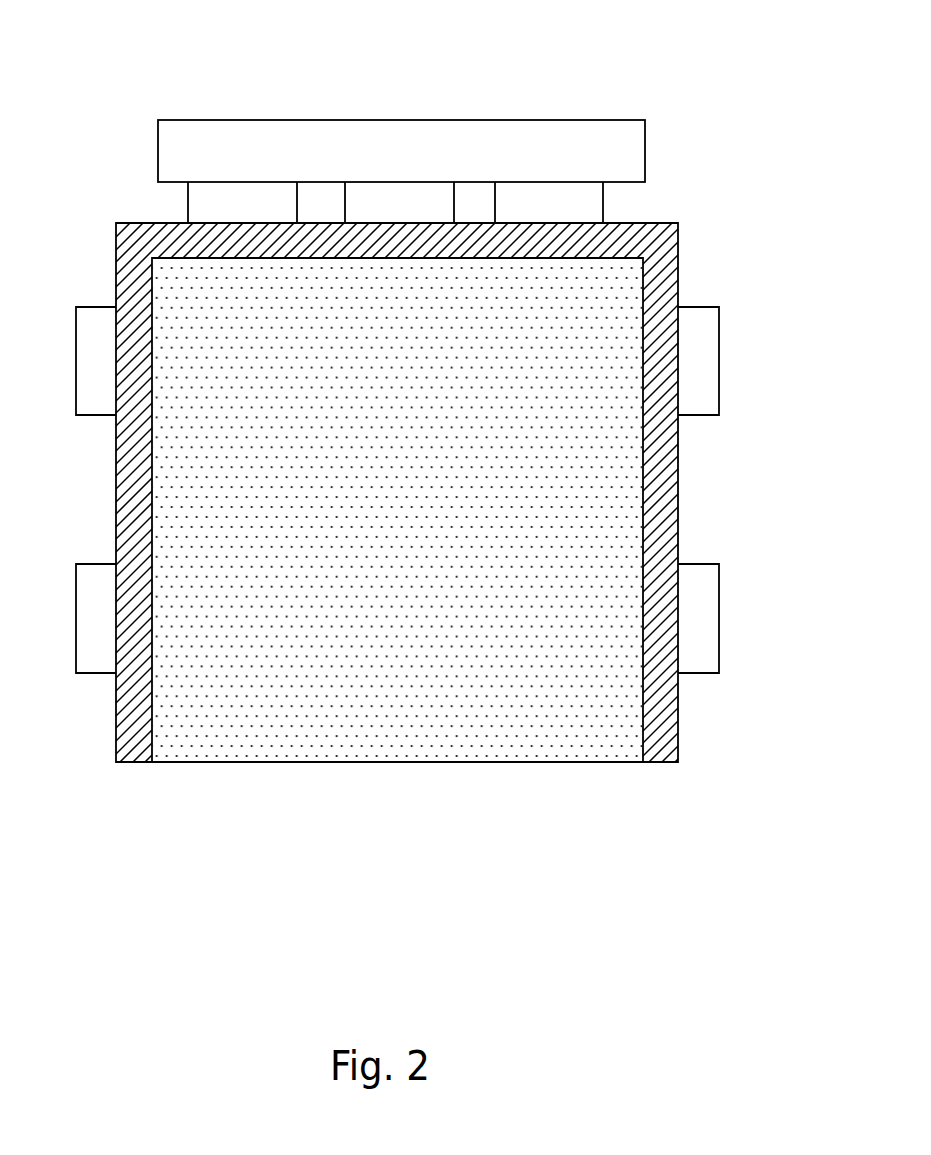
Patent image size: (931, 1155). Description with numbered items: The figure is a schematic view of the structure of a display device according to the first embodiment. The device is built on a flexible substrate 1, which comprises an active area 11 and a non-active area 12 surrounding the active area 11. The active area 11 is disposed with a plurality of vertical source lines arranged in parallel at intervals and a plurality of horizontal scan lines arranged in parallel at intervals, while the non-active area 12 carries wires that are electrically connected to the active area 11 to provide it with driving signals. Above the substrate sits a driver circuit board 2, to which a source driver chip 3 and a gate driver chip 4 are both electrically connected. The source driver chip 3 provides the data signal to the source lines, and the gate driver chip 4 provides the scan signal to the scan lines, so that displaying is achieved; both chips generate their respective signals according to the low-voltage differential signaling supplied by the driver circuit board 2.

The flexible substrate 1 is at (465, 577).
The active area 11 is at (410, 613).
The non-active area 12 is at (662, 735).
The driver circuit board 2 is at (390, 130).
The source driver chip 3 is at (550, 207).
The gate driver chip 4 is at (712, 367).